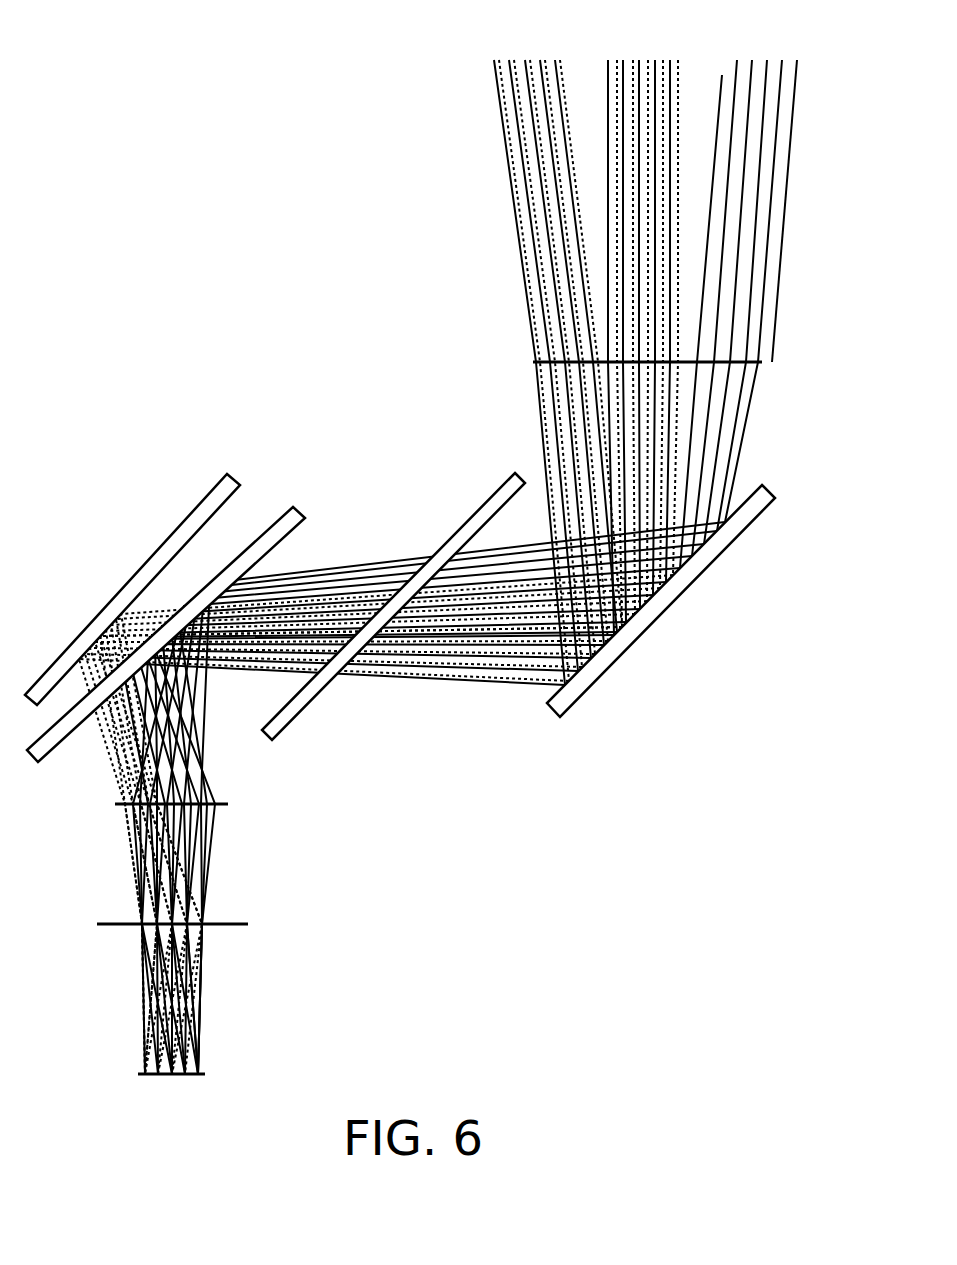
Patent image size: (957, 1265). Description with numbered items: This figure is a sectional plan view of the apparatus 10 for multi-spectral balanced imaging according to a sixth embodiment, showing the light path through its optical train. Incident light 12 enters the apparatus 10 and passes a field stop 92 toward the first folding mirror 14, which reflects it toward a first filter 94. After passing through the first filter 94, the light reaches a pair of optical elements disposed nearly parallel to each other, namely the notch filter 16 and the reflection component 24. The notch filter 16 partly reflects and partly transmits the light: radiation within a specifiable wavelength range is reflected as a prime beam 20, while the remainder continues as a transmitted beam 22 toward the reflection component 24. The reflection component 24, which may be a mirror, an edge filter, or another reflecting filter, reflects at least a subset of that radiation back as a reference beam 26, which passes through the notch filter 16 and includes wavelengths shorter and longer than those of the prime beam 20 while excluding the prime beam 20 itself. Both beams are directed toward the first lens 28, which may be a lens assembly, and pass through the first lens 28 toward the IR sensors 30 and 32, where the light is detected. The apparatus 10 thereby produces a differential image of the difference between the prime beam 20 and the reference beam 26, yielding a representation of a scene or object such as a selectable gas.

The apparatus 10 is at (110, 160).
The incident light 12 is at (603, 76).
The first folding mirror 14 is at (587, 700).
The notch filter 16 is at (293, 533).
The prime beam 20 is at (215, 823).
The transmitted beam 22 is at (220, 545).
The reflection component 24 is at (210, 490).
The reference beam 26 is at (105, 660).
The first lens 28 is at (240, 924).
The IR sensor 30 is at (168, 1077).
The IR sensor 32 is at (188, 1077).
The field stop 92 is at (751, 364).
The first filter 94 is at (490, 503).